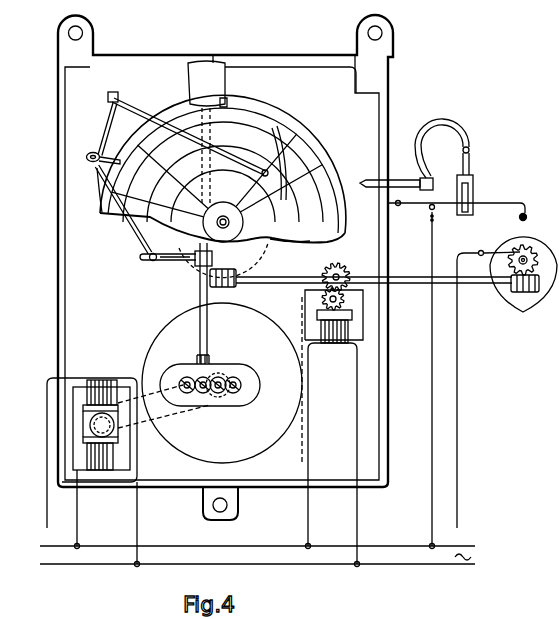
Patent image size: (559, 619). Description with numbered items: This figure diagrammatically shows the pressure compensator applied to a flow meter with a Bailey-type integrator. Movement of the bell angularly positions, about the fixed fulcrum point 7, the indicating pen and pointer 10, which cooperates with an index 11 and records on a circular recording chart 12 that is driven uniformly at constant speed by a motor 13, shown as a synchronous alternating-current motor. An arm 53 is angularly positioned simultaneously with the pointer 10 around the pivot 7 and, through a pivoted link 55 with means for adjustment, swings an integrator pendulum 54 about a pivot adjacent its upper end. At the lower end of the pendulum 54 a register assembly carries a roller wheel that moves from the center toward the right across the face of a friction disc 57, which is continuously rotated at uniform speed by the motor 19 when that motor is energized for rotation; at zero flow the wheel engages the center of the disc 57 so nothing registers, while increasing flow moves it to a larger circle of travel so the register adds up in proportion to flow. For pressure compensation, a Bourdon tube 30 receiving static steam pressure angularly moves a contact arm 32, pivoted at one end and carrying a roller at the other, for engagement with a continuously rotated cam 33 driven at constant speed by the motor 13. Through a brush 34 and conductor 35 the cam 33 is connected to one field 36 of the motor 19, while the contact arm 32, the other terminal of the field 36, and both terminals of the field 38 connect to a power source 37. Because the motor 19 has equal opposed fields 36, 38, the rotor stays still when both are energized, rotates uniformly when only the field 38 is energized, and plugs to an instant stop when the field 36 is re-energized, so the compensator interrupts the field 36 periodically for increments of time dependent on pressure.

The fixed fulcrum point 7 is at (113, 90).
The indicating pen and pointer 10 is at (132, 109).
The index 11 is at (275, 167).
The circular recording chart 12 is at (303, 245).
The motor 13 is at (338, 345).
The motor 19 is at (132, 440).
The Bourdon tube 30 is at (437, 122).
The contact arm 32 is at (487, 199).
The cam 33 is at (544, 247).
The brush 34 is at (491, 250).
The conductor 35 is at (458, 407).
The field 36 is at (105, 382).
The power source 37 is at (66, 548).
The field 38 is at (102, 473).
The arm 53 is at (110, 122).
The integrator pendulum 54 is at (199, 282).
The pivoted link 55 is at (133, 233).
The friction disc 57 is at (152, 348).